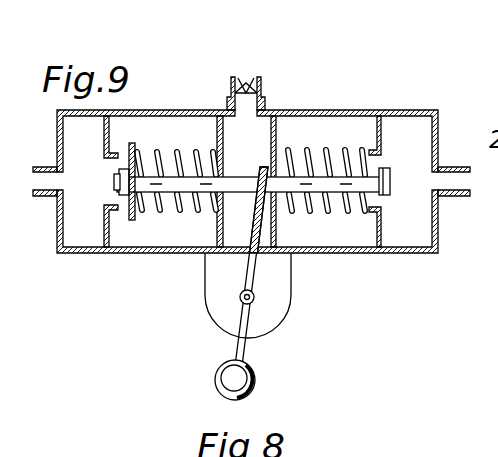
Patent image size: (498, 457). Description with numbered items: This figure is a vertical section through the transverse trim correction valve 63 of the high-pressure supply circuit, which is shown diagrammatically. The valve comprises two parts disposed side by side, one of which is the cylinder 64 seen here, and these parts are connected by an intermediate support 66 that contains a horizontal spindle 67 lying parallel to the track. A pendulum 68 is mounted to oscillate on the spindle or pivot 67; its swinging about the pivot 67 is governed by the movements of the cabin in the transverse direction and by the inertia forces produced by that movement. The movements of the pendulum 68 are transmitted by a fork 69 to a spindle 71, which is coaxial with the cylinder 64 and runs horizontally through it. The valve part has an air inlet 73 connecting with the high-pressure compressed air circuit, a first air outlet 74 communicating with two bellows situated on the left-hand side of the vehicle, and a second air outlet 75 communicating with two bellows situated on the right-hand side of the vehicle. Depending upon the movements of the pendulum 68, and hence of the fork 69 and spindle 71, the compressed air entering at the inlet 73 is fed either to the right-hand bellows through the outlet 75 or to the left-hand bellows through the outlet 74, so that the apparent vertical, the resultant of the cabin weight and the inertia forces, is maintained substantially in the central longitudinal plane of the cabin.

In FIG. 9, the transverse trim correction valve 63 is at (346, 112).
In FIG. 8, the transverse trim correction valve 63 is at (385, 448).
In FIG. 9, the valve part (cylinder) 64 is at (124, 254).
In FIG. 9, the intermediate support 66 is at (220, 268).
In FIG. 9, the spindle (pivot) 67 is at (241, 299).
In FIG. 9, the pendulum 68 is at (224, 382).
In FIG. 9, the fork 69 is at (257, 266).
In FIG. 9, the spindle 71 is at (188, 184).
In FIG. 9, the air inlet 73 is at (246, 78).
In FIG. 9, the first air outlet 74 is at (47, 176).
In FIG. 9, the second air outlet 75 is at (452, 183).